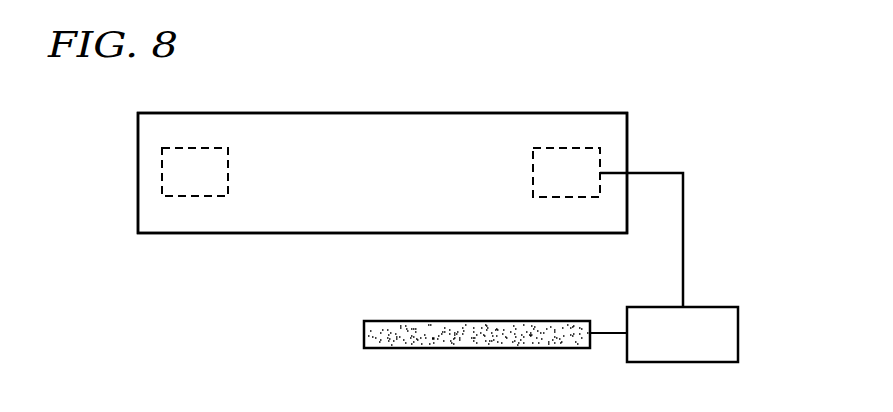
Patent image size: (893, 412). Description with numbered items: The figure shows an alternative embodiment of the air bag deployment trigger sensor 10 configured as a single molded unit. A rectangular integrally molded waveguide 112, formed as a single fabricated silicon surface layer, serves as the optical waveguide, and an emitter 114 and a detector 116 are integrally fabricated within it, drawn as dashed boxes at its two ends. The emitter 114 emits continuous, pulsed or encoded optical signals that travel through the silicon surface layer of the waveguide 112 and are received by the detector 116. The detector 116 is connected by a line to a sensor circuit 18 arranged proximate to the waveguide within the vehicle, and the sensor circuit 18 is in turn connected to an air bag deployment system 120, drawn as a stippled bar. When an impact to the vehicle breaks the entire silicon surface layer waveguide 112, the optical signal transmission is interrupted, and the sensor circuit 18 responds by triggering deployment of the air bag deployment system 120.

The air bag deployment trigger sensor 10 is at (253, 74).
The integrally molded waveguide 112 is at (377, 113).
The emitter 114 is at (228, 165).
The detector 116 is at (535, 163).
The sensor circuit 18 is at (739, 333).
The air bag deployment system 120 is at (364, 331).